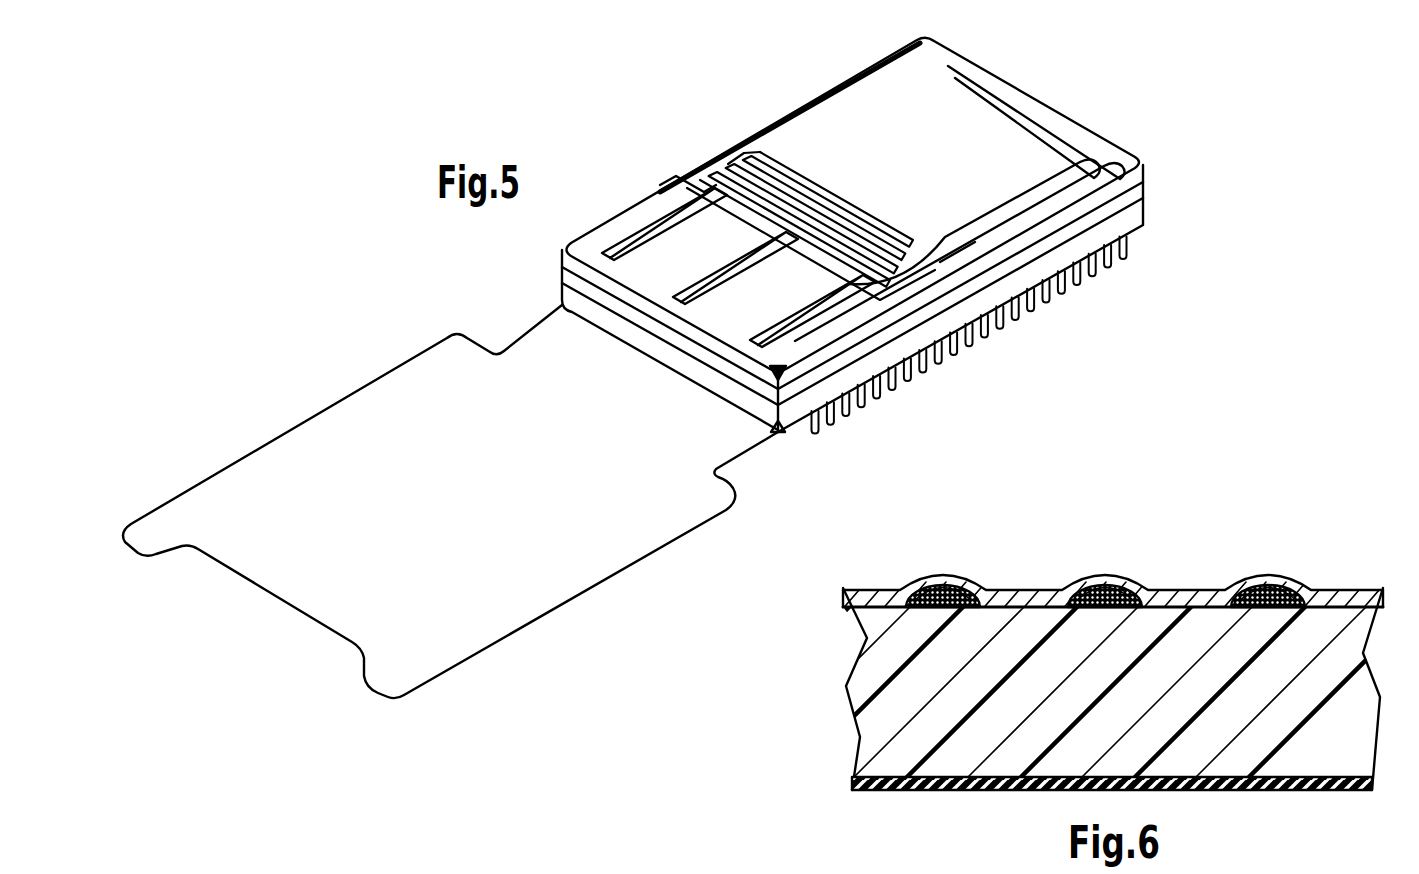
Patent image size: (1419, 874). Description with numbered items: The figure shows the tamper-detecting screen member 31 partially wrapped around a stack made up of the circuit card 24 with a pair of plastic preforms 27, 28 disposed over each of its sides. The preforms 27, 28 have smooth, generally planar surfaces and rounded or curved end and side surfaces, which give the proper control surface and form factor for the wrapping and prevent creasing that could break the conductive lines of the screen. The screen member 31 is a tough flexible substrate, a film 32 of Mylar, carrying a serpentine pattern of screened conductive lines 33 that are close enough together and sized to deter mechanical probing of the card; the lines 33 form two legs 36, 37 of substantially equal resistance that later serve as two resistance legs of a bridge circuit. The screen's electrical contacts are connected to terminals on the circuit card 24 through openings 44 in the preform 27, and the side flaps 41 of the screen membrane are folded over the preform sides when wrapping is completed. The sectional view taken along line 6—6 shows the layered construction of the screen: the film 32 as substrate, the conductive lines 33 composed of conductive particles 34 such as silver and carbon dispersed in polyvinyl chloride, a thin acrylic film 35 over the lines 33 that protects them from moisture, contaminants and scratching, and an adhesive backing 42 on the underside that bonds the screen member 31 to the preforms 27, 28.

In FIG. 5, the screen member 31 is at (1012, 69).
In FIG. 6, the screen member 31 is at (828, 744).
In FIG. 5, the side flaps 41 is at (637, 535).
In FIG. 5, the plastic preform 27 is at (1148, 168).
In FIG. 5, the circuit card 24 is at (1142, 194).
In FIG. 5, the plastic preform 28 is at (1140, 227).
In FIG. 5, the screened conductive lines 33 is at (838, 178).
In FIG. 6, the screened conductive lines 33 is at (1293, 585).
In FIG. 5, the leg 37 is at (668, 186).
In FIG. 5, the leg 36 is at (952, 252).
In FIG. 5, the openings 44 is at (620, 250).
In FIG. 5, the line 6— 6 is at (863, 217).
In FIG. 6, the film 32 is at (870, 682).
In FIG. 6, the acrylic film 35 is at (1113, 571).
In FIG. 6, the conductive particles 34 is at (1253, 580).
In FIG. 6, the adhesive backing 42 is at (853, 788).